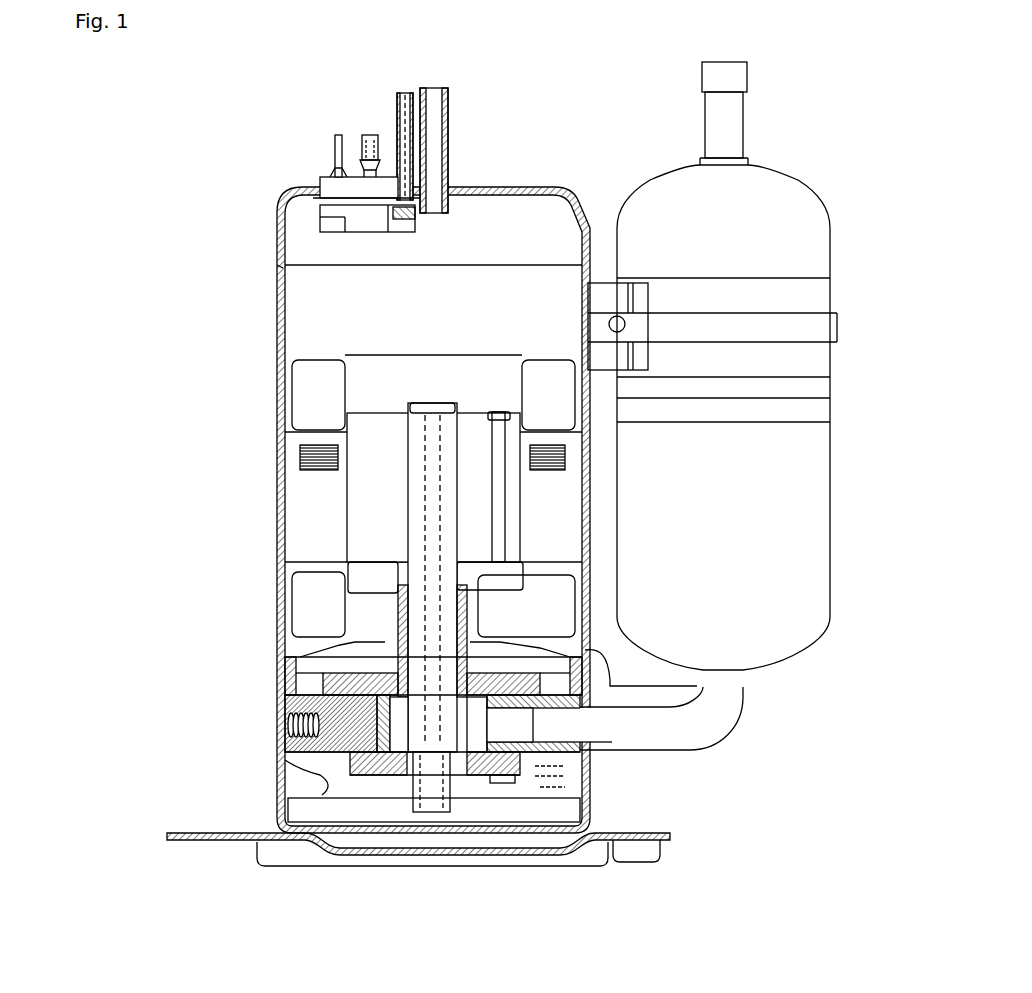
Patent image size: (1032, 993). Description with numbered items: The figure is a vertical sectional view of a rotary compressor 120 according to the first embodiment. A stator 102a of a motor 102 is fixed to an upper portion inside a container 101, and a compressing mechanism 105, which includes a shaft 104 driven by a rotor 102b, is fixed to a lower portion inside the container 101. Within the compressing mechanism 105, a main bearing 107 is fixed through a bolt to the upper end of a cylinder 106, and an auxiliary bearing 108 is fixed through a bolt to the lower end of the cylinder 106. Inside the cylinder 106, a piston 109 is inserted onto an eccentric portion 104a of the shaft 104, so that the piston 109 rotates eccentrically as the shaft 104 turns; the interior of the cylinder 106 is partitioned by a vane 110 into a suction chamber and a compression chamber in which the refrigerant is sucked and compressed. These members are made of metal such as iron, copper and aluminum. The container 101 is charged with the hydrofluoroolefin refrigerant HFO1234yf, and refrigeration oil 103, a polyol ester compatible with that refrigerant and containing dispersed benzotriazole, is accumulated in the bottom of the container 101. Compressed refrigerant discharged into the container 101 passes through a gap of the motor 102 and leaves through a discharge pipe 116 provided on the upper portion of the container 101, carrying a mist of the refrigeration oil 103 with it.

The container 101 is at (275, 263).
The motor 102 is at (325, 453).
The stator 102a is at (318, 455).
The rotor 102b is at (372, 457).
The refrigeration oil 103 is at (545, 778).
The shaft 104 is at (274, 610).
The eccentric portion 104a is at (397, 729).
The compressing mechanism 105 is at (441, 760).
The cylinder 106 is at (600, 752).
The main bearing 107 is at (610, 688).
The auxiliary bearing 108 is at (487, 772).
The piston 109 is at (330, 680).
The vane 110 is at (283, 808).
The discharge pipe 116 is at (447, 122).
The compressor 120 is at (363, 865).